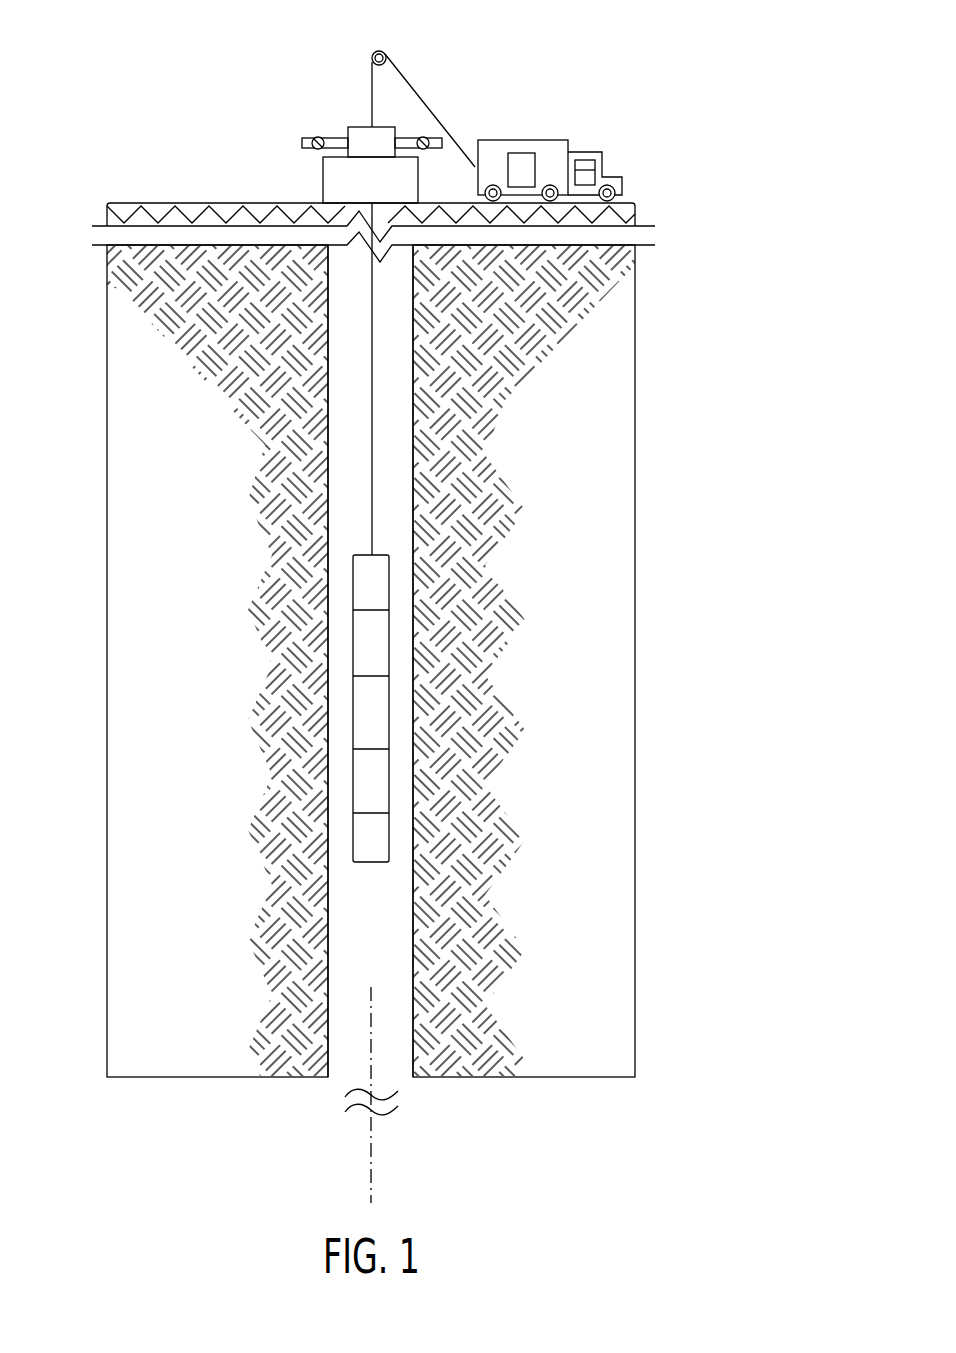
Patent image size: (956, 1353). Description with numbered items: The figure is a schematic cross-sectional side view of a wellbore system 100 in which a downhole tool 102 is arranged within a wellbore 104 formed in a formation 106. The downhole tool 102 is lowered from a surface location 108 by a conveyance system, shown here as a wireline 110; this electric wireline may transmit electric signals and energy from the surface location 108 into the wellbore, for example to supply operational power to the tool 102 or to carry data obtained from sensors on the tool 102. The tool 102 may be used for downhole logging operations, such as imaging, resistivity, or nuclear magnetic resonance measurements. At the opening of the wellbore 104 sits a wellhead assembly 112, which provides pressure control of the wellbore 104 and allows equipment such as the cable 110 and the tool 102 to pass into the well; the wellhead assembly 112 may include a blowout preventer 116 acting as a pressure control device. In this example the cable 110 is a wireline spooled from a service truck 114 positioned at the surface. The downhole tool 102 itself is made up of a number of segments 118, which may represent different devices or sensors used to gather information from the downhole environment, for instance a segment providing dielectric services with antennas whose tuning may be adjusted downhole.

The wellbore system 100 is at (541, 61).
The downhole tool 102 is at (388, 402).
The wellbore 104 is at (412, 500).
The formation 106 is at (178, 547).
The surface location 108 is at (150, 207).
The wireline 110 is at (372, 306).
The wellhead assembly 112 is at (353, 106).
The service truck 114 is at (542, 140).
The blowout preventer 116 is at (278, 176).
The segments 118 is at (377, 577).